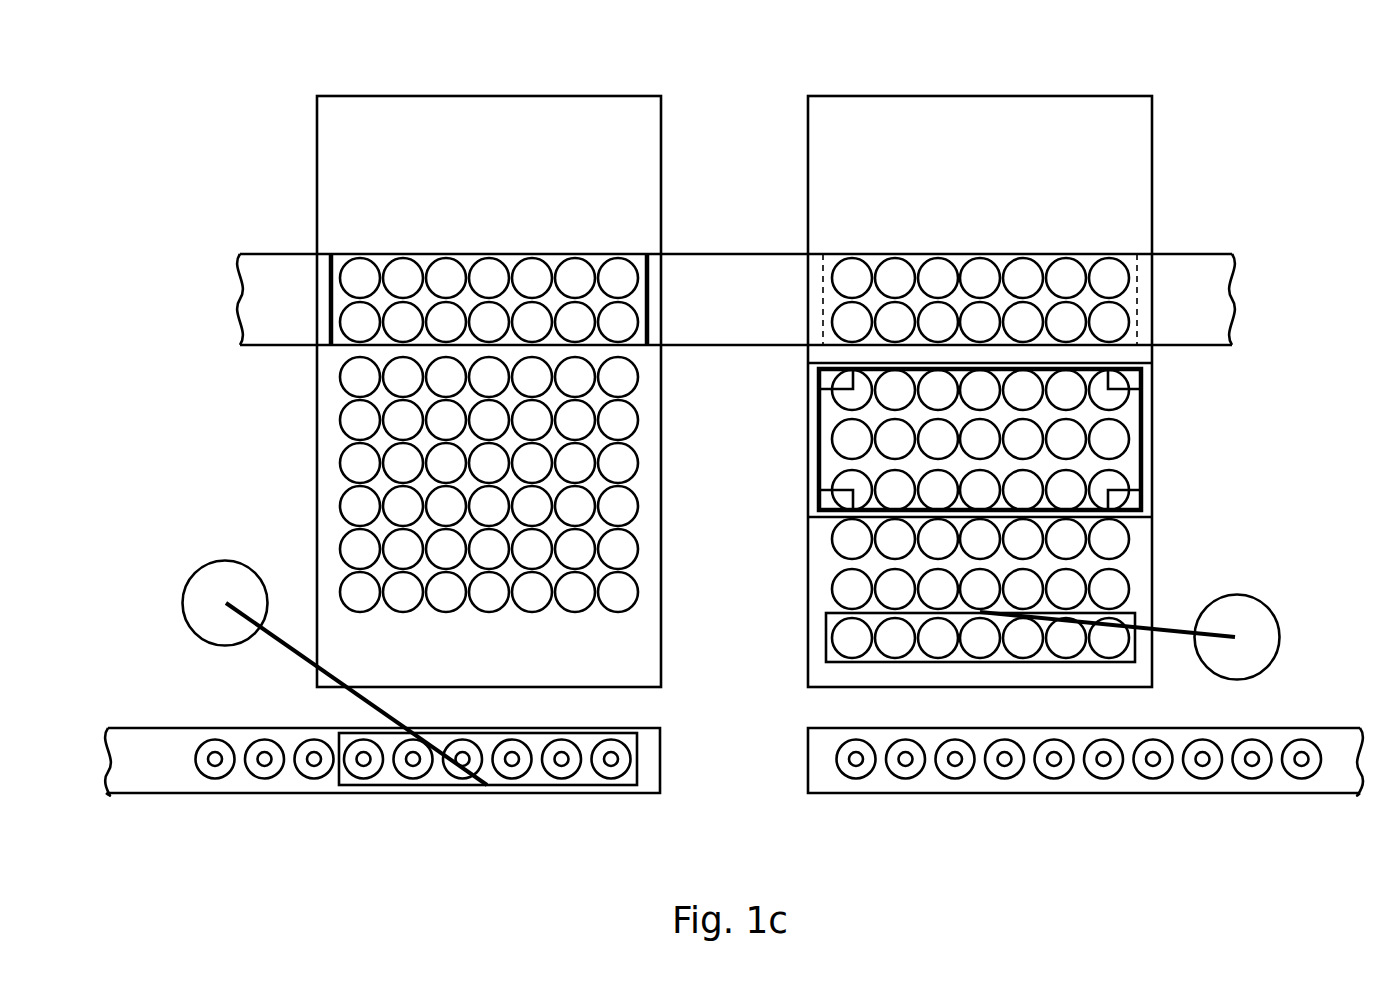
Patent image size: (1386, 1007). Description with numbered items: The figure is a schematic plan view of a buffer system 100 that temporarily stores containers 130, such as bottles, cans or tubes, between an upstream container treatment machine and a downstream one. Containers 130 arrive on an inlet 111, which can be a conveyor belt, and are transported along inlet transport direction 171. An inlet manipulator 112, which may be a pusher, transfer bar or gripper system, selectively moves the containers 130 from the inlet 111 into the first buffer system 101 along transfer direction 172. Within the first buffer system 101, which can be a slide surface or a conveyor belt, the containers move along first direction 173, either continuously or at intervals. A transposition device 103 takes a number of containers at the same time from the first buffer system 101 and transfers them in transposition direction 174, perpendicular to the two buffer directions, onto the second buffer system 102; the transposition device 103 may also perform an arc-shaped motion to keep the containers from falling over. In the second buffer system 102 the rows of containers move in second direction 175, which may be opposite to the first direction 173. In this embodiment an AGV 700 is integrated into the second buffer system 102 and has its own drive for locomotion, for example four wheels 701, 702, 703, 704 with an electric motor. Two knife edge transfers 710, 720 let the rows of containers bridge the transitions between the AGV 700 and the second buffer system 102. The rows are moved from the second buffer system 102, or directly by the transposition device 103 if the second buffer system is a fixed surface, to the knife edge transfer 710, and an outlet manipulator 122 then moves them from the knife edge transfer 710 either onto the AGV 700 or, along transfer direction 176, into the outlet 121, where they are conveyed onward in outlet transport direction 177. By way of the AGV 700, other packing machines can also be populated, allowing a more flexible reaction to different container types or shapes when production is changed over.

The buffer system 100 is at (225, 88).
The first buffer system 101 is at (317, 157).
The second buffer system 102 is at (1153, 157).
The transposition device 103 is at (770, 253).
The inlet 111 is at (185, 793).
The inlet manipulator 112 is at (225, 560).
The outlet 121 is at (1187, 793).
The outlet manipulator 122 is at (1280, 637).
The containers 130 is at (254, 773).
The inlet transport direction 171 is at (393, 813).
The transfer direction into first buffer system 172 is at (489, 652).
The first direction 173 is at (683, 498).
The transposition direction 174 is at (647, 301).
The second direction 175 is at (785, 405).
The transfer direction to outlet 176 is at (980, 662).
The outlet transport direction 177 is at (1111, 814).
The AGV 700 is at (1143, 436).
The wheel 701 is at (1143, 380).
The wheel 702 is at (1143, 497).
The wheel 703 is at (817, 508).
The wheel 704 is at (817, 380).
The knife edge transfer 710 is at (1153, 363).
The knife edge transfer 720 is at (1153, 517).